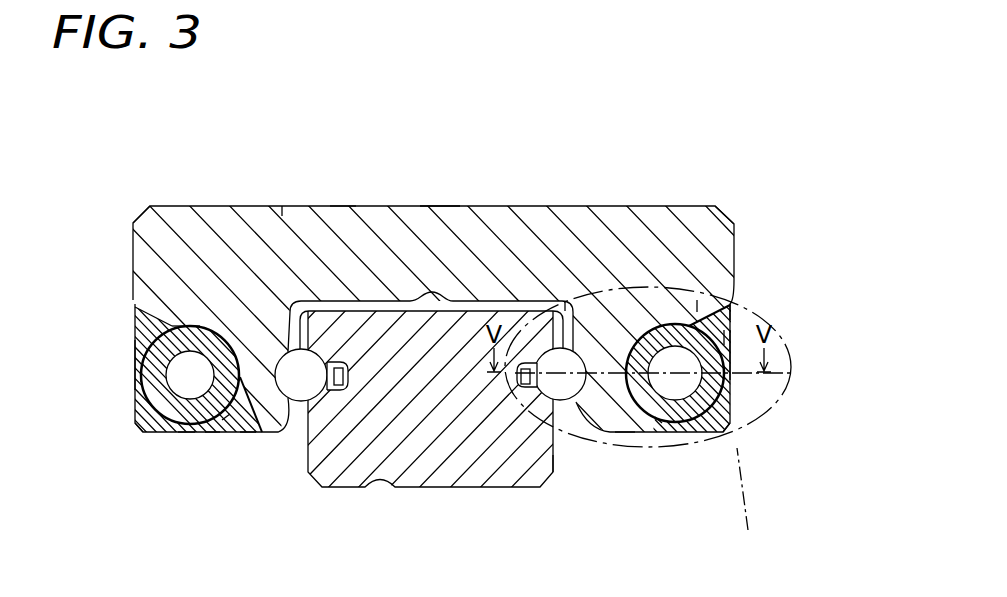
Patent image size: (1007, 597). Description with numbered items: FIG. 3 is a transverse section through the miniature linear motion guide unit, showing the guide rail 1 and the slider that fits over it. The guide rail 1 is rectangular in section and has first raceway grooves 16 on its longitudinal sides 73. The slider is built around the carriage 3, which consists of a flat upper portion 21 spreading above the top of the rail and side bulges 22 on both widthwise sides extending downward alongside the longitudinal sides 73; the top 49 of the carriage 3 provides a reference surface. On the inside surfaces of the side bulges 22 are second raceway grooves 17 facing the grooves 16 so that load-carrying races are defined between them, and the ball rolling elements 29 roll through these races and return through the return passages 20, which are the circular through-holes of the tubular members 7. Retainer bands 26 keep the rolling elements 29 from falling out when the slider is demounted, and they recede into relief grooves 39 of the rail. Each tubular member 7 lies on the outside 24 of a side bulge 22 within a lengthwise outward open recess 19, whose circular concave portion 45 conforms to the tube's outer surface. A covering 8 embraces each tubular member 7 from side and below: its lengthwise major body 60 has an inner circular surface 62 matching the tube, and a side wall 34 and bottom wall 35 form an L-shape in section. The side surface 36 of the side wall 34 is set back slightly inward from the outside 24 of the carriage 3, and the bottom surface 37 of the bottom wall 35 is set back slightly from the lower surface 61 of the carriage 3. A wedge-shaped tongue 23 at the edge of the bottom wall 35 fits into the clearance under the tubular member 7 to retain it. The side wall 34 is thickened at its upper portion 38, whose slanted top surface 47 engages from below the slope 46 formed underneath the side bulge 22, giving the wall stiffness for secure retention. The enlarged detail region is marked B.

The guide rail 1 is at (424, 432).
The carriage 3 is at (222, 212).
The tubular member 7 is at (152, 387).
The covering 8 is at (138, 366).
The raceway groove 16 is at (318, 392).
The raceway groove 17 is at (282, 216).
The outward open recess 19 is at (224, 424).
The return passage 20 is at (143, 427).
The upper portion 21 is at (437, 212).
The side bulge 22 is at (263, 424).
The tongue 23 is at (212, 436).
The outside 24 is at (132, 258).
The retainer band 26 is at (517, 390).
The rolling element 29 is at (305, 383).
The side wall 34 is at (142, 336).
The bottom wall 35 is at (178, 434).
The side surface 36 is at (142, 378).
The bottom surface 37 is at (185, 436).
The upper portion 38 is at (740, 307).
The relief groove 39 is at (337, 392).
The circular concave portion 45 is at (197, 335).
The slope 46 is at (743, 308).
The top surface 47 is at (697, 308).
The top 49 is at (343, 208).
The lengthwise major body 60 is at (743, 413).
The lower surface 61 is at (248, 436).
The inner circular surface 62 is at (658, 308).
The longitudinal side 73 is at (557, 455).
The detail view B is at (750, 504).